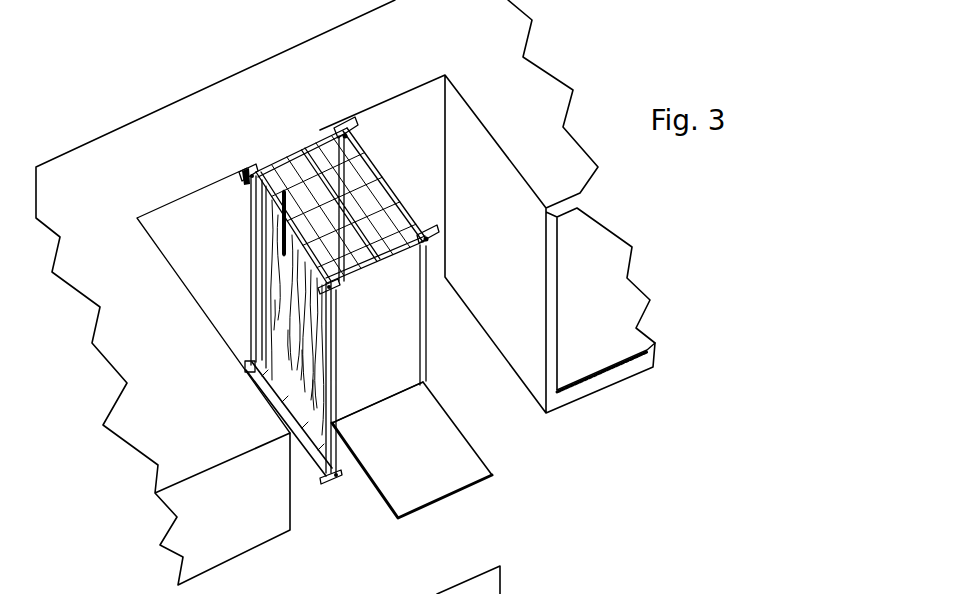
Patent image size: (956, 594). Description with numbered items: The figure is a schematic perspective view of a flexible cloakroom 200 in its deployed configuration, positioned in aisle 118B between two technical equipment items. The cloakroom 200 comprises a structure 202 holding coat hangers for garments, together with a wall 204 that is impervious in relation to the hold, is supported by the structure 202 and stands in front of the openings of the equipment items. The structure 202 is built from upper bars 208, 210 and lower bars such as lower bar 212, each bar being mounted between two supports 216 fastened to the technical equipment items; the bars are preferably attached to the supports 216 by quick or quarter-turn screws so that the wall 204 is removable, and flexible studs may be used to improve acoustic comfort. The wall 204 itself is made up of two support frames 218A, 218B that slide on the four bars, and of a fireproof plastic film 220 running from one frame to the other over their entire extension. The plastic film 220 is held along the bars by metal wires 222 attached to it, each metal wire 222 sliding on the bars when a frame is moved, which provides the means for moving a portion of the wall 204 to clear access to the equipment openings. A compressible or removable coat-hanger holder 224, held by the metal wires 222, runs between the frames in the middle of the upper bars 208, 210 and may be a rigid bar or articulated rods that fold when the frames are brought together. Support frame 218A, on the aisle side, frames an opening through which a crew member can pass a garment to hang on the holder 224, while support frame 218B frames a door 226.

The cloakroom 200 is at (387, 277).
The structure 202 is at (228, 202).
The wall 204 is at (234, 297).
The upper bar 208 is at (262, 212).
The upper bar 210 is at (370, 163).
The lower bar 212 is at (290, 440).
The support 216 is at (432, 243).
The support frame 218A is at (298, 152).
The support frame 218B is at (398, 258).
The aisle 118B is at (327, 155).
The plastic film 220 is at (300, 376).
The metal wire 222 is at (275, 322).
The coat-hanger holder 224 is at (362, 198).
The door 226 is at (383, 357).